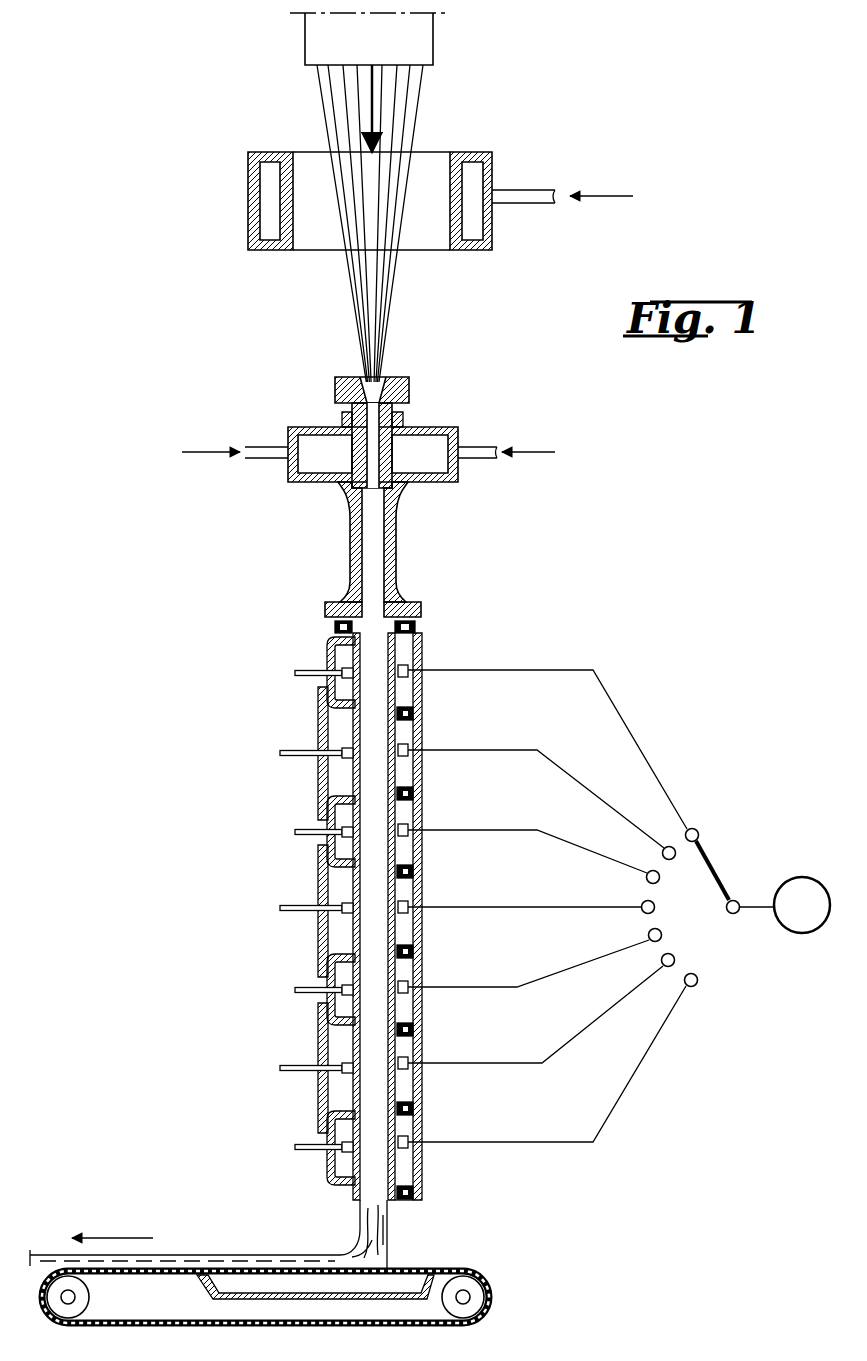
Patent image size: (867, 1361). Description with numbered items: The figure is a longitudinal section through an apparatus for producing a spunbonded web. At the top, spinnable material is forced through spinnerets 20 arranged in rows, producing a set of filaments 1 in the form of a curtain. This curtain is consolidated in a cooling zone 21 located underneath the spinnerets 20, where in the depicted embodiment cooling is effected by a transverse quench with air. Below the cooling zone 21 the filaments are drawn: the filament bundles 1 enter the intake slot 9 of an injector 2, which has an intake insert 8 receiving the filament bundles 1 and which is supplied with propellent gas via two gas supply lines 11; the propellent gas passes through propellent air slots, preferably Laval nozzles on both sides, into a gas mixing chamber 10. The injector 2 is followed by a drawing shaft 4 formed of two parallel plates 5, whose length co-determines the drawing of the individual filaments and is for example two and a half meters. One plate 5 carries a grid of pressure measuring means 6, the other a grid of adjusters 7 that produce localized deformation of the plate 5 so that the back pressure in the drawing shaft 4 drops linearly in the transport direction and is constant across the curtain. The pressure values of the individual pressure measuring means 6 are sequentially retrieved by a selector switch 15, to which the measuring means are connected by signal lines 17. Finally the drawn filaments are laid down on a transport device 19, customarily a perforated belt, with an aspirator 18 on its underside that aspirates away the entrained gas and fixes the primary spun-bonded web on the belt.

The filaments 1 is at (412, 112).
The injector 2 is at (300, 410).
The drawing shaft 4 is at (418, 633).
The plates 5 is at (352, 727).
The pressure measuring means 6 is at (408, 666).
The adjusters 7 is at (294, 681).
The intake insert 8 is at (410, 388).
The intake slot 9 is at (386, 382).
The gas mixing chamber 10 is at (375, 492).
The gas supply lines 11 is at (266, 452).
The selector switch 15 is at (713, 866).
The signal lines 17 is at (477, 672).
The aspirator 18 is at (385, 1288).
The transport device 19 is at (455, 1265).
The spinnerets 20 is at (415, 43).
The cooling zone 21 is at (420, 164).